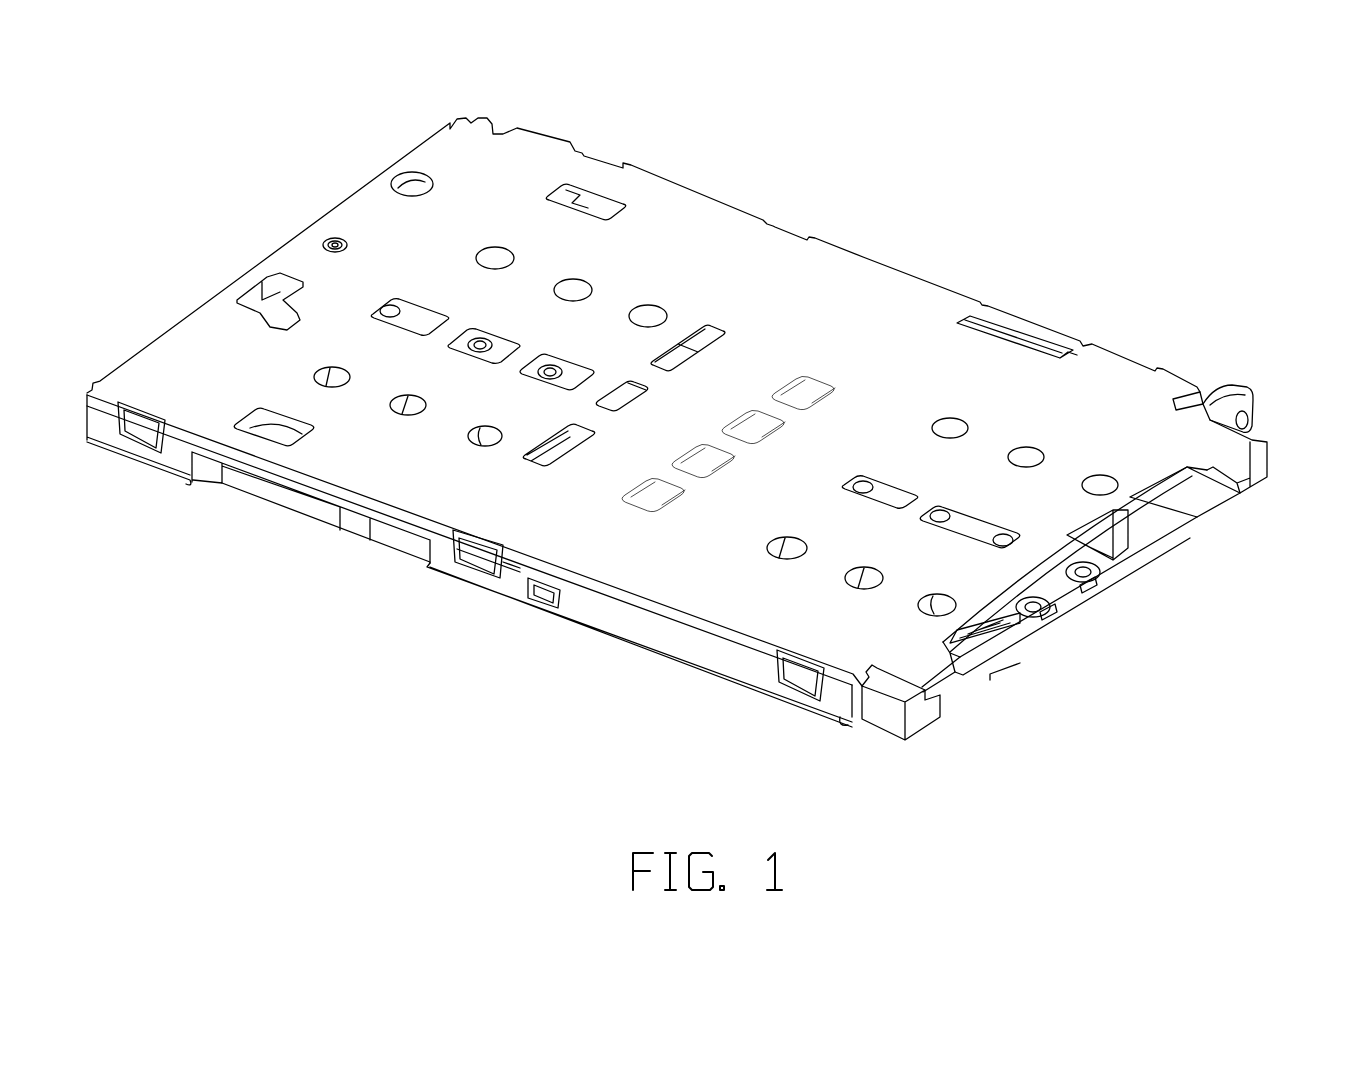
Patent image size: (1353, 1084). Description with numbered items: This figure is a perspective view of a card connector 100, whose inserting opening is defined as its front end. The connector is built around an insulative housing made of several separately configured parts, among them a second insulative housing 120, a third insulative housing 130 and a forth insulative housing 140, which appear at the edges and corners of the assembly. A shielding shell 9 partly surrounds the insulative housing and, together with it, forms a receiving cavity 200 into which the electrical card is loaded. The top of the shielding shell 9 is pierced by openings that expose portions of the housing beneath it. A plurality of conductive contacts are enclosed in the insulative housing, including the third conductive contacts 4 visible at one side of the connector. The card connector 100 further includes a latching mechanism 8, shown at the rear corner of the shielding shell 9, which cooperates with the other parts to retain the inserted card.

The card connector 100 is at (717, 458).
The shielding shell 9 is at (887, 305).
The latching mechanism 8 is at (1245, 390).
The forth insulative housing 140 is at (1263, 460).
The receiving cavity 200 is at (1192, 490).
The second insulative housing 120 is at (1077, 581).
The third conductive contacts 4 is at (1105, 553).
The third insulative housing 130 is at (885, 720).